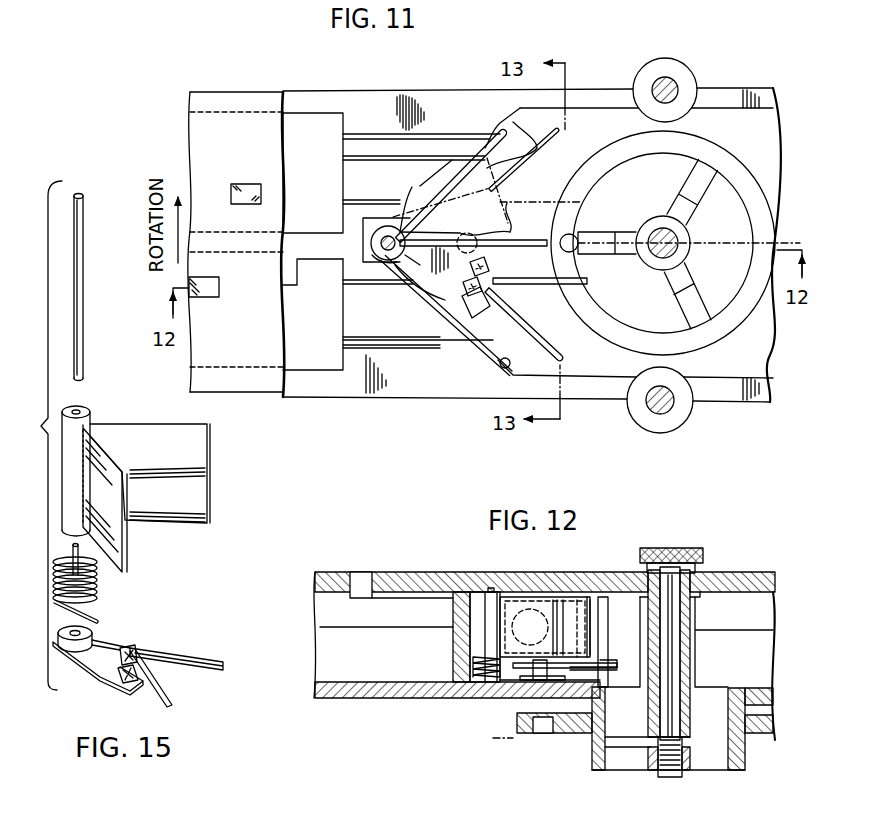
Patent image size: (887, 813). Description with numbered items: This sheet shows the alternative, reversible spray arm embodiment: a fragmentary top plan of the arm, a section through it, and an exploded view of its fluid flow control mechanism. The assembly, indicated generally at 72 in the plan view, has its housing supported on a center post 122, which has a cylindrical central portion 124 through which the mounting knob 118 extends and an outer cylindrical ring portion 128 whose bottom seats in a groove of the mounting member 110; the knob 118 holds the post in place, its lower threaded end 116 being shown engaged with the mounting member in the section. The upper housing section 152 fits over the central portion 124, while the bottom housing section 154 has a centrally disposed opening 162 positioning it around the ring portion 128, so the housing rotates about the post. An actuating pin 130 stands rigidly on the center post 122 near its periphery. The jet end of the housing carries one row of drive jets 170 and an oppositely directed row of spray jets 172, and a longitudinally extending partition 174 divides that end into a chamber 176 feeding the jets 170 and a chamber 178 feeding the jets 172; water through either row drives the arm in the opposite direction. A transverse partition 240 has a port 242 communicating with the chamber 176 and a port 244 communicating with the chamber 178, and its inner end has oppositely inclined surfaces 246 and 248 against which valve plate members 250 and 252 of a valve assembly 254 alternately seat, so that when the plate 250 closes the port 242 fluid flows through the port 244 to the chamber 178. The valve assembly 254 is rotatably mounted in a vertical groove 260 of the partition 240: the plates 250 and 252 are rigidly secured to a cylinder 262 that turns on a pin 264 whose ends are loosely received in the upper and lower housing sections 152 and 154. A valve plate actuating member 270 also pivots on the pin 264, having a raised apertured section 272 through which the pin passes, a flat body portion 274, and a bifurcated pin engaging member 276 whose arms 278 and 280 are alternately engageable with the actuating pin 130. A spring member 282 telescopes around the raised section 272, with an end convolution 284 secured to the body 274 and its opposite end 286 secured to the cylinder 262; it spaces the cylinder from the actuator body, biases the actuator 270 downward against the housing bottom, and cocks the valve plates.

In FIG. 11, the frame 72 is at (603, 80).
In FIG. 12, the mounting member 110 is at (547, 733).
In FIG. 12, the nut 116 is at (677, 766).
In FIG. 11, the mounting knob 118 is at (660, 262).
In FIG. 12, the mounting knob 118 is at (683, 548).
In FIG. 11, the center post 122 is at (688, 227).
In FIG. 12, the center post 122 is at (695, 647).
In FIG. 12, the cylindrical central portion 124 is at (685, 667).
In FIG. 12, the outer cylindrical ring portion 128 is at (733, 690).
In FIG. 11, the actuating pin 130 is at (577, 236).
In FIG. 12, the actuating pin 130 is at (605, 643).
In FIG. 12, the upper housing section 152 is at (458, 573).
In FIG. 12, the bottom housing section 154 is at (458, 692).
In FIG. 12, the centrally disposed opening 162 is at (605, 723).
In FIG. 11, the drive jets 170 is at (240, 185).
In FIG. 11, the spray jets 172 is at (215, 298).
In FIG. 12, the spray jets 172 is at (362, 578).
In FIG. 11, the longitudinally extending partition 174 is at (309, 246).
In FIG. 11, the chamber 176 is at (300, 123).
In FIG. 11, the chamber 178 is at (296, 366).
In FIG. 11, the transverse partition 240 is at (348, 217).
In FIG. 11, the port 242 is at (348, 162).
In FIG. 11, the port 244 is at (350, 332).
In FIG. 11, the inclined surface 246 is at (542, 154).
In FIG. 11, the inclined surface 248 is at (505, 364).
In FIG. 11, the valve plate member 250 is at (486, 182).
In FIG. 12, the valve plate member 250 is at (645, 707).
In FIG. 15, the valve plate member 250 is at (205, 460).
In FIG. 11, the valve plate member 252 is at (505, 229).
In FIG. 12, the valve plate member 252 is at (587, 597).
In FIG. 15, the valve plate member 252 is at (125, 550).
In FIG. 11, the valve assembly 254 is at (430, 218).
In FIG. 12, the valve assembly 254 is at (530, 597).
In FIG. 15, the valve assembly 254 is at (118, 445).
In FIG. 11, the vertical groove 260 is at (367, 219).
In FIG. 11, the cylinder 262 is at (402, 298).
In FIG. 15, the cylinder 262 is at (122, 397).
In FIG. 11, the pin 264 is at (367, 240).
In FIG. 12, the pin 264 is at (490, 590).
In FIG. 15, the pin 264 is at (83, 322).
In FIG. 11, the valve plate actuating member 270 is at (556, 260).
In FIG. 12, the valve plate actuating member 270 is at (560, 640).
In FIG. 15, the valve plate actuating member 270 is at (138, 636).
In FIG. 15, the raised apertured section 272 is at (77, 648).
In FIG. 11, the flat body portion 274 is at (467, 303).
In FIG. 12, the flat body portion 274 is at (560, 670).
In FIG. 15, the flat body portion 274 is at (92, 668).
In FIG. 11, the bifurcated pin engaging member 276 is at (493, 310).
In FIG. 12, the bifurcated pin engaging member 276 is at (520, 684).
In FIG. 15, the bifurcated pin engaging member 276 is at (140, 645).
In FIG. 11, the arm 278 is at (547, 285).
In FIG. 12, the arm 278 is at (605, 668).
In FIG. 15, the arm 278 is at (217, 670).
In FIG. 11, the arm 280 is at (562, 344).
In FIG. 12, the arm 280 is at (533, 668).
In FIG. 15, the arm 280 is at (168, 697).
In FIG. 12, the spring member 282 is at (467, 660).
In FIG. 15, the spring member 282 is at (100, 583).
In FIG. 15, the end convolution 284 is at (92, 613).
In FIG. 15, the end 286 is at (97, 587).